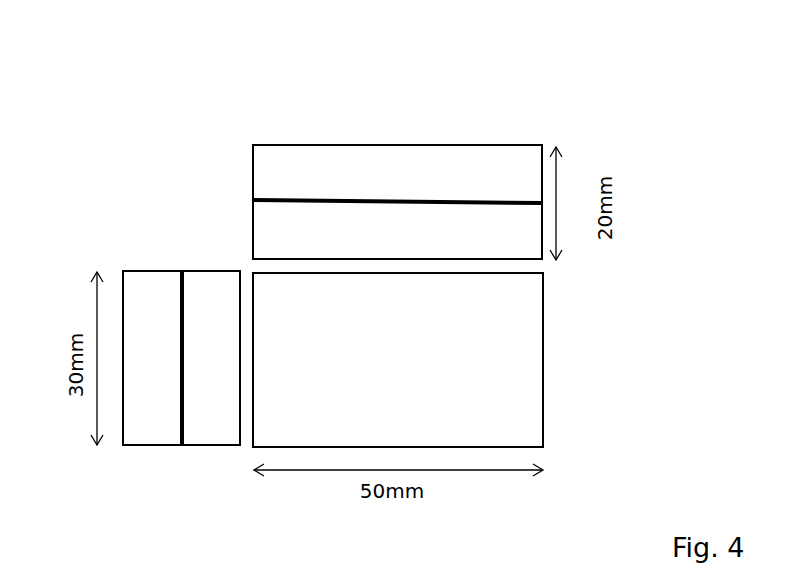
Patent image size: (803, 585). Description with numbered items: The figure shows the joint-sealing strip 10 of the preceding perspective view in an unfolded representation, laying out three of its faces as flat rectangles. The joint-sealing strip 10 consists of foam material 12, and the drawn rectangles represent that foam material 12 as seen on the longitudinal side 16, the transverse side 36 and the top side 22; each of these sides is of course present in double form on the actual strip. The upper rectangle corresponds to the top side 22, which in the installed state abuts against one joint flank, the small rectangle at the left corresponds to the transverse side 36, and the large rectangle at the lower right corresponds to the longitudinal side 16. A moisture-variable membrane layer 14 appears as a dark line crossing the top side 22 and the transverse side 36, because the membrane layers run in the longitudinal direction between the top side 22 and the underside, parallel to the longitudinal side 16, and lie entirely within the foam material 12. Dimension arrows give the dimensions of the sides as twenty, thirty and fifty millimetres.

The joint-sealing strip 10 is at (136, 179).
The foam material 12 is at (450, 169).
The moisture-variable membrane layer 14 is at (313, 197).
The longitudinal side 16 is at (472, 402).
The top side 22 is at (412, 158).
The transverse side 36 is at (128, 344).